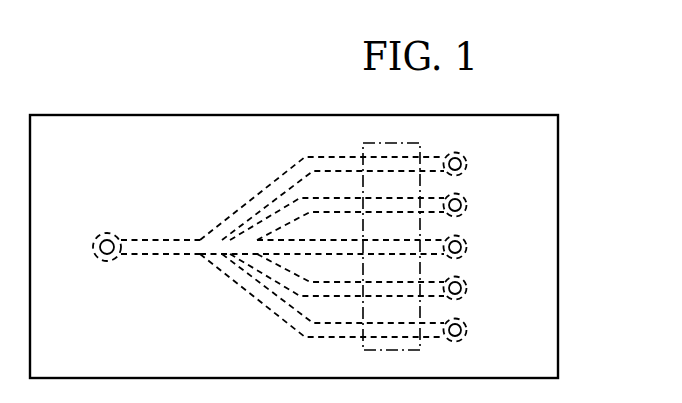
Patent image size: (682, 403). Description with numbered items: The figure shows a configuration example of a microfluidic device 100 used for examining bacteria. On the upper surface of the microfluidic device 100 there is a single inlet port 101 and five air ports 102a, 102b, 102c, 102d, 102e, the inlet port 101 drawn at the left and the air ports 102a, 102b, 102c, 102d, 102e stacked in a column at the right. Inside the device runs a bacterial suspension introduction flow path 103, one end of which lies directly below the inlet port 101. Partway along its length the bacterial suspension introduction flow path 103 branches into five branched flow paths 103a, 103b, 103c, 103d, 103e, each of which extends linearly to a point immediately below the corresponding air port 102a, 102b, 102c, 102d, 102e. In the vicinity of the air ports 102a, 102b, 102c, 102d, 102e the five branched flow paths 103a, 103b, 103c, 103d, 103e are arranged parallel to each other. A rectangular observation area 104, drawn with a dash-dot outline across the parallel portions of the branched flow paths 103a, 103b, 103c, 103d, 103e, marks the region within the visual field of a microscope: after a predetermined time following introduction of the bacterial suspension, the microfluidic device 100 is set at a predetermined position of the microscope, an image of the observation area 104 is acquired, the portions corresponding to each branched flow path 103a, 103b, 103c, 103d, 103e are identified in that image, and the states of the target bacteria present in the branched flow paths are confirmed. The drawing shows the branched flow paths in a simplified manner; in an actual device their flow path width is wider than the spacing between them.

The microfluidic device 100 is at (559, 212).
The inlet port 101 is at (100, 240).
The air port 102a is at (463, 156).
The air port 102b is at (463, 197).
The air port 102c is at (463, 239).
The air port 102d is at (463, 280).
The air port 102e is at (463, 322).
The bacterial suspension introduction flow path 103 is at (188, 223).
The branched flow path 103a is at (350, 156).
The branched flow path 103b is at (350, 197).
The branched flow path 103c is at (348, 254).
The branched flow path 103d is at (348, 297).
The branched flow path 103e is at (350, 337).
The observation area 104 is at (420, 350).